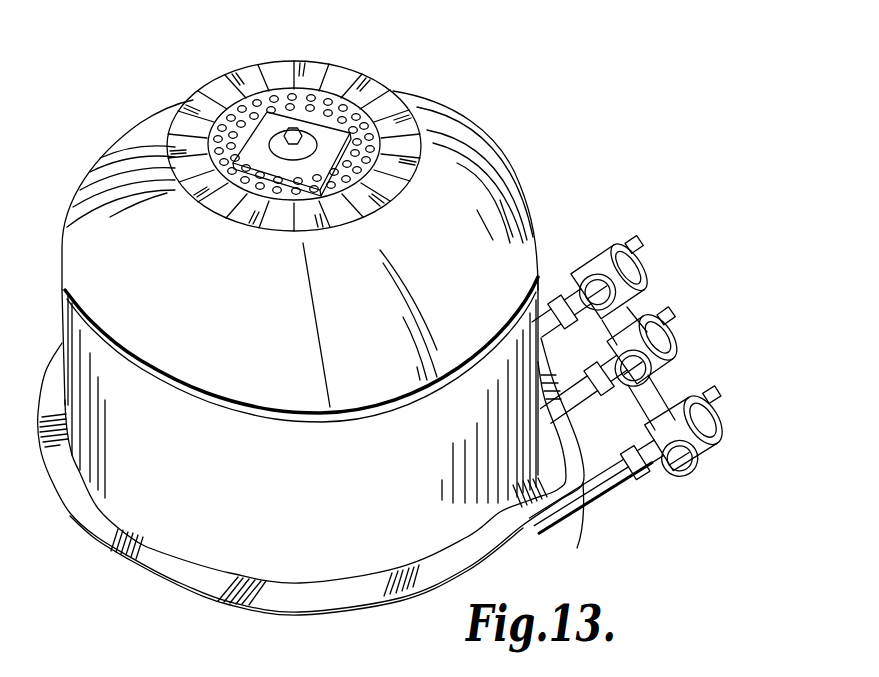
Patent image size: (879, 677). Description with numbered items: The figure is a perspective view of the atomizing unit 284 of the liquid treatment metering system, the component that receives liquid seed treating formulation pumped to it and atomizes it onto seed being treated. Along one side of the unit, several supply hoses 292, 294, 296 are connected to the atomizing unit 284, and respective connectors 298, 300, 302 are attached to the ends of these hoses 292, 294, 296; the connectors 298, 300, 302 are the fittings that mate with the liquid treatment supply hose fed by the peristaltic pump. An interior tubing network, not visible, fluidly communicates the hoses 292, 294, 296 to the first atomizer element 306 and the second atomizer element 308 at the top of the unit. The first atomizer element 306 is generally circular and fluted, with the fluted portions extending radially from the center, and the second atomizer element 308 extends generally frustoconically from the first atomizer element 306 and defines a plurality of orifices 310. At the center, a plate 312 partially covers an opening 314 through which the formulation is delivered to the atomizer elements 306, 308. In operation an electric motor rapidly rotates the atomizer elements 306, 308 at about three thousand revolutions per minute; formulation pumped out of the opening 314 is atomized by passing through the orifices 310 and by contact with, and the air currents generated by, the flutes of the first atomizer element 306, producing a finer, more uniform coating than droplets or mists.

The atomizing unit 284 is at (493, 147).
The supply hose 292 is at (550, 268).
The supply hose 294 is at (578, 545).
The supply hose 296 is at (605, 482).
The connector 298 is at (630, 243).
The connector 300 is at (683, 317).
The connector 302 is at (721, 392).
The first atomizer element 306 is at (497, 177).
The second atomizer element 308 is at (333, 87).
The orifices 310 is at (313, 92).
The plate 312 is at (273, 123).
The opening 314 is at (350, 133).